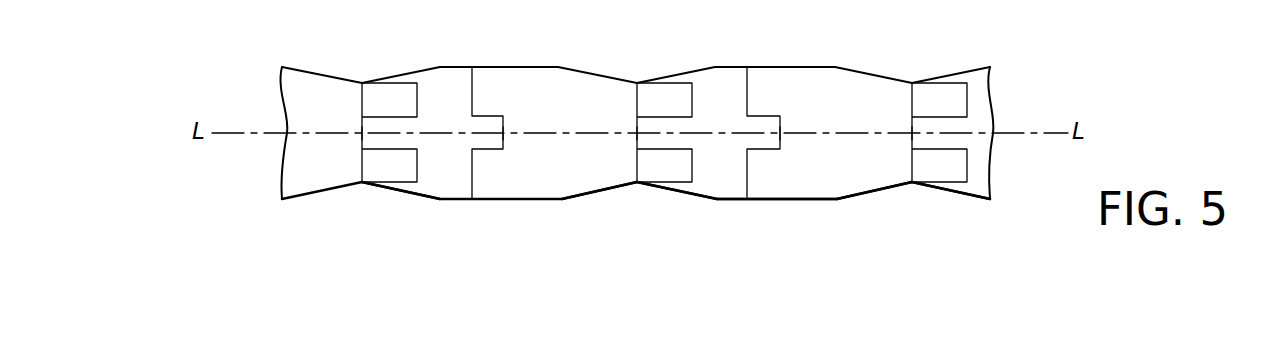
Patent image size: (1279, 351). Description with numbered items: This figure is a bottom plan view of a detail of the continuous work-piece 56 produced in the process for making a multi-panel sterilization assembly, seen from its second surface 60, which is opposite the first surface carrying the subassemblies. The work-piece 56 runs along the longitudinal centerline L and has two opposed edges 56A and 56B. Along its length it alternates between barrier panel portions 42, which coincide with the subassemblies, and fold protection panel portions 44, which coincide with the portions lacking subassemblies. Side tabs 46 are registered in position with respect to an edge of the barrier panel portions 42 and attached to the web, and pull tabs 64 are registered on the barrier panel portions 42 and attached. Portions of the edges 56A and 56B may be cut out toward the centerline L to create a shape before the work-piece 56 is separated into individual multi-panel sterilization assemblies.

The barrier panel portion 42 is at (436, 186).
The fold protection panel portion 44 is at (587, 180).
The side tab 46 is at (487, 85).
The continuous work-piece 56 is at (1006, 209).
The first opposed edge of the continuous work-piece 56A is at (813, 67).
The second opposed edge of the continuous work-piece 56B is at (820, 200).
The second surface 60 is at (580, 121).
The pull tab 64 is at (382, 97).